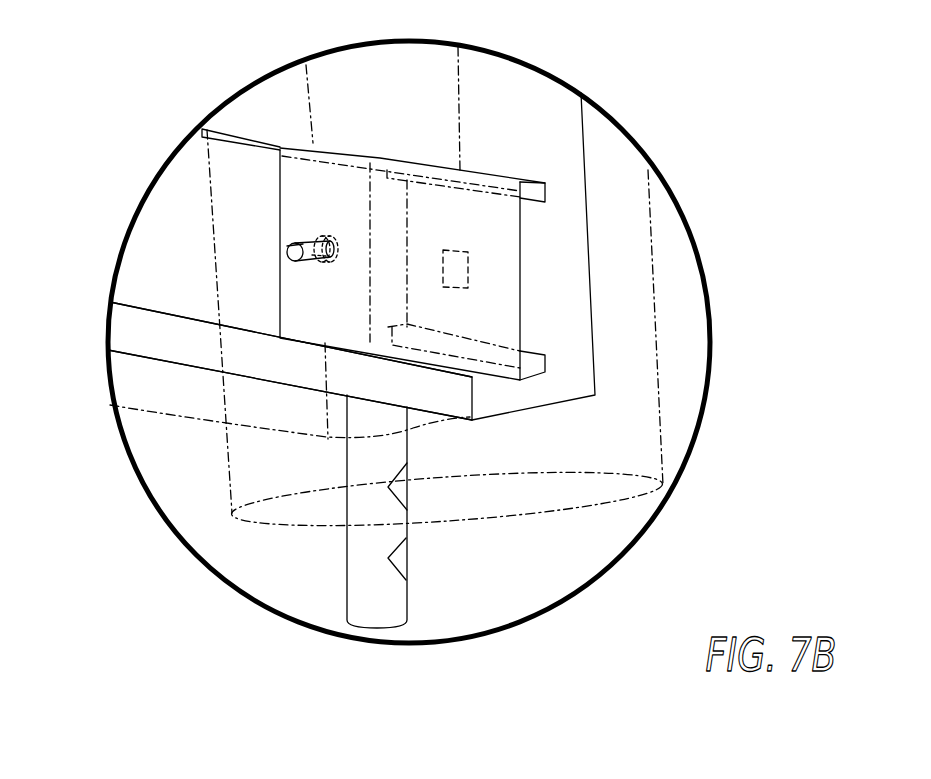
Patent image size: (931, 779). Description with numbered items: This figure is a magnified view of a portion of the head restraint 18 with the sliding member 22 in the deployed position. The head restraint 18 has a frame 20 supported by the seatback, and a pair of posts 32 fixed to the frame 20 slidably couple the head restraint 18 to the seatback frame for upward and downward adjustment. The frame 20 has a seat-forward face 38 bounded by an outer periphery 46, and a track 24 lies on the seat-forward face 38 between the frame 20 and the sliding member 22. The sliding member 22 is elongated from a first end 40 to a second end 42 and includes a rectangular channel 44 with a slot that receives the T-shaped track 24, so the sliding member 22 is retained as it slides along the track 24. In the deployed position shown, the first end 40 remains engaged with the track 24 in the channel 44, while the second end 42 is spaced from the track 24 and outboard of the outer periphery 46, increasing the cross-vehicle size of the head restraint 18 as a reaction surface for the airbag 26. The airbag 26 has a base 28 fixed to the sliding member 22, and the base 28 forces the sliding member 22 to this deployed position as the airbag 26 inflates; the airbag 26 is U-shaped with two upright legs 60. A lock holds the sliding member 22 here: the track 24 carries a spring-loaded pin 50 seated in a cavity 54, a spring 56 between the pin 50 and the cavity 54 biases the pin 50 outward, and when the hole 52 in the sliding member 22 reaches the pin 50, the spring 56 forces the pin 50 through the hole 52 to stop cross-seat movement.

The head restraint 18 is at (692, 313).
The frame 20 is at (543, 158).
The sliding member 22 is at (520, 225).
The track 24 is at (169, 267).
The airbag 26 is at (210, 182).
The base 28 is at (458, 293).
The posts 32 is at (347, 553).
The seat-forward face 38 is at (417, 67).
The first end 40 is at (280, 173).
The second end 42 is at (520, 275).
The channel 44 is at (525, 340).
The outer periphery 46 is at (462, 131).
The spring-loaded pin 50 is at (287, 252).
The hole 52 is at (300, 240).
The cavity 54 is at (320, 262).
The spring 56 is at (327, 238).
The legs 60 is at (227, 452).